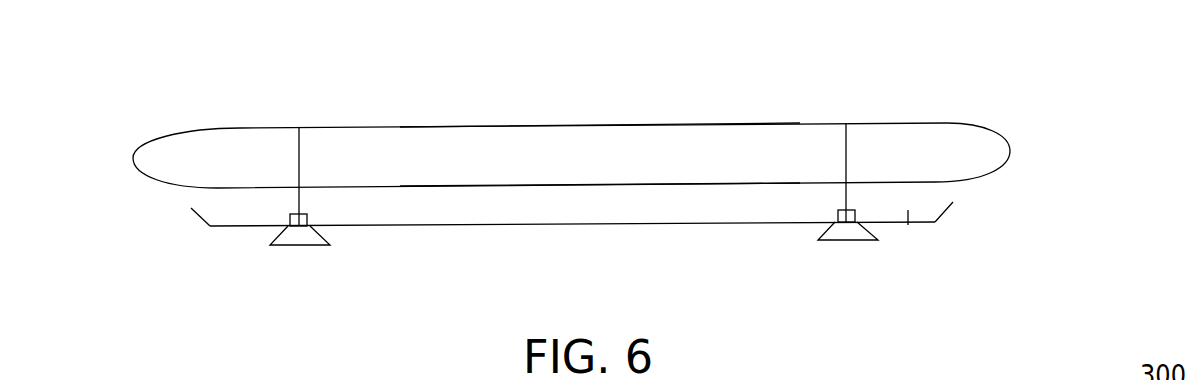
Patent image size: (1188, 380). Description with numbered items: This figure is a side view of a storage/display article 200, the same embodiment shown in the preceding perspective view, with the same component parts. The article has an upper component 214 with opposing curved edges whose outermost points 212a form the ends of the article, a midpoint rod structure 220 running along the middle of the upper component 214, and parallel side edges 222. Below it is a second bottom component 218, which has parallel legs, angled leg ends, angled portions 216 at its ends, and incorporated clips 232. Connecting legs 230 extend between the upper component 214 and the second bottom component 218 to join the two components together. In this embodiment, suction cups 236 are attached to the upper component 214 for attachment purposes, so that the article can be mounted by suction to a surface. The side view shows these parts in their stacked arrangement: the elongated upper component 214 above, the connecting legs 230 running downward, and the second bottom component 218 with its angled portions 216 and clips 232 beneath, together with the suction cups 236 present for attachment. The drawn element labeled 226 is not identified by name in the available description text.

The storage/display article 200 is at (1020, 81).
The outermost points of opposing curved edges 212a is at (137, 150).
The upper component 214 is at (998, 110).
The angled portions 216 is at (949, 211).
The second bottom component 218 is at (193, 193).
The midpoint rod structure 220 is at (638, 124).
The parallel side edges 222 is at (657, 184).
The support rail 226 is at (482, 224).
The connecting legs 230 is at (302, 212).
The incorporated clips 232 is at (908, 225).
The suction cups 236 is at (852, 230).